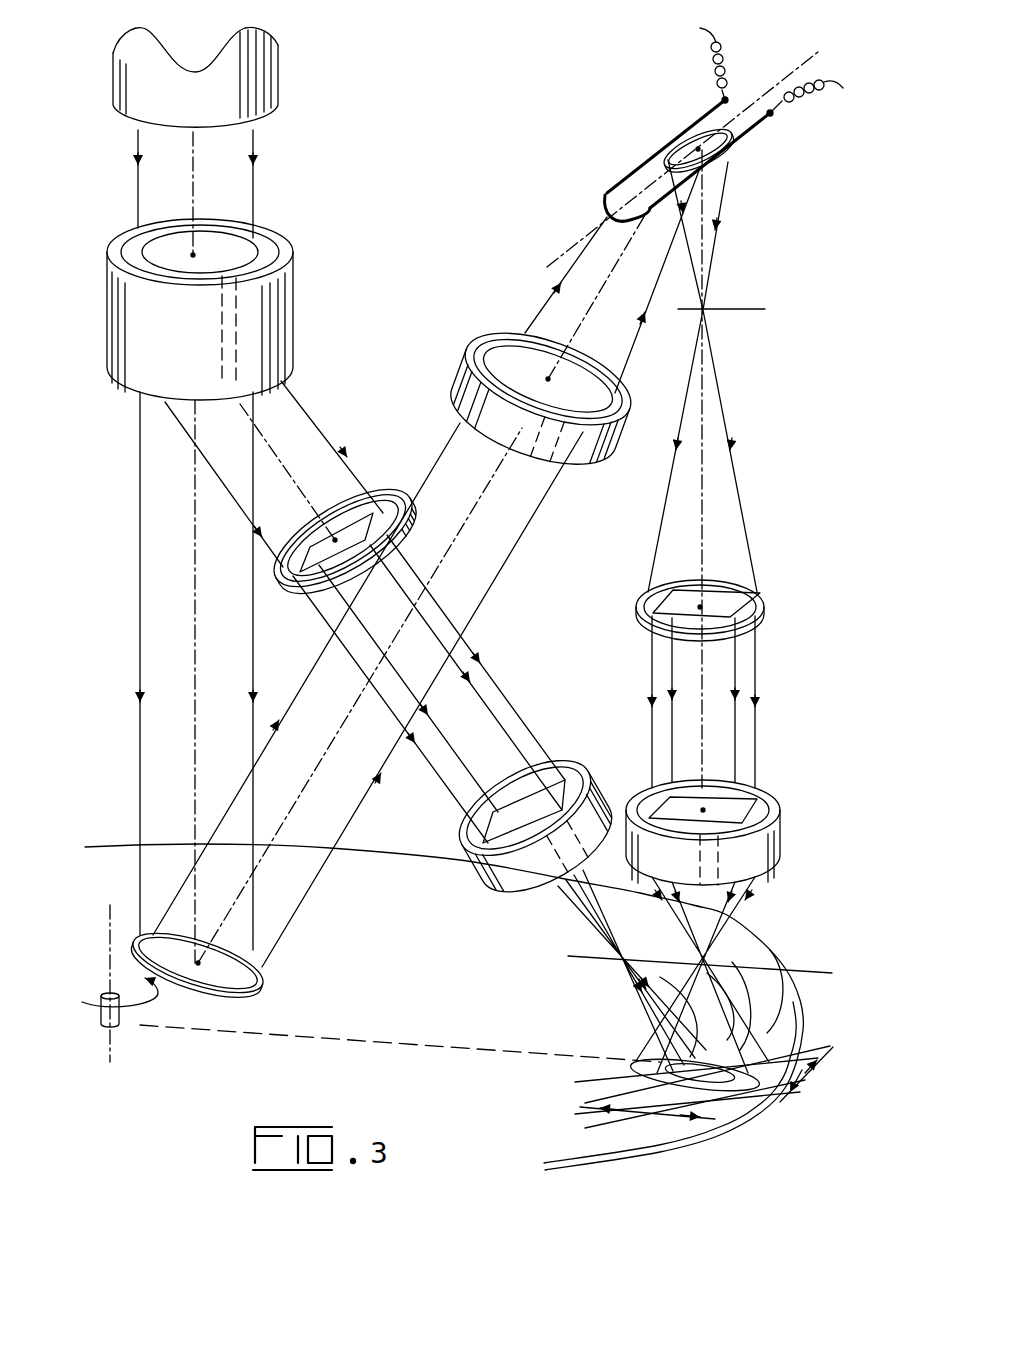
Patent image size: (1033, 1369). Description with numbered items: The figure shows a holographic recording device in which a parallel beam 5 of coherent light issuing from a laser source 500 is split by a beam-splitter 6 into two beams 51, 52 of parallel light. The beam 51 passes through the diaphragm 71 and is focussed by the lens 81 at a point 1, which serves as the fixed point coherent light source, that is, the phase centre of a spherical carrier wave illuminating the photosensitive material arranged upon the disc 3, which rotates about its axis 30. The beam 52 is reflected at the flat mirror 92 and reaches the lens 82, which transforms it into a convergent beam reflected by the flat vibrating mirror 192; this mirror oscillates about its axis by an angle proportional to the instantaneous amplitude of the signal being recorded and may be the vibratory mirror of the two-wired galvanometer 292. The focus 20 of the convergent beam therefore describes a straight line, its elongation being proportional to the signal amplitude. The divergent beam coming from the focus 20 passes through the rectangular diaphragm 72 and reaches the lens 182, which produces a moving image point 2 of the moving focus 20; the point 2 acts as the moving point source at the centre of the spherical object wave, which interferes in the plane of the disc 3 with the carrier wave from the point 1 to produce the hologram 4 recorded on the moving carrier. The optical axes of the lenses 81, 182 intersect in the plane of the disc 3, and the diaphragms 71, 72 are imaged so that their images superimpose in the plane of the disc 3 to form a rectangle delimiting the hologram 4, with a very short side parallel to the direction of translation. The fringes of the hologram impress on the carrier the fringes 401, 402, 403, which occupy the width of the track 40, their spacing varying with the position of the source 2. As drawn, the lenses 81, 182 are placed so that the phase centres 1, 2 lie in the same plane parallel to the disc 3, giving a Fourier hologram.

The laser source 500 is at (285, 80).
The parallel beam 5 is at (256, 182).
The beam-splitter 6 is at (284, 326).
The beam 51 is at (327, 422).
The beam 52 is at (253, 660).
The diaphragm 71 is at (392, 500).
The rectangular diaphragm 72 is at (760, 594).
The lens 81 is at (576, 772).
The lens 82 is at (504, 336).
The flat mirror 92 is at (262, 982).
The axis 30 is at (122, 1020).
The flat vibrating mirror 192 is at (680, 136).
The two-wired galvanometer 292 is at (747, 135).
The focus 20 is at (703, 310).
The lens 182 is at (772, 800).
The disc 3 is at (372, 855).
The point 1 is at (620, 960).
The image point 2 is at (693, 952).
The hologram 4 is at (656, 1070).
The track 40 is at (600, 1092).
The fringe 401 is at (768, 1033).
The fringe 402 is at (767, 990).
The fringe 403 is at (748, 975).